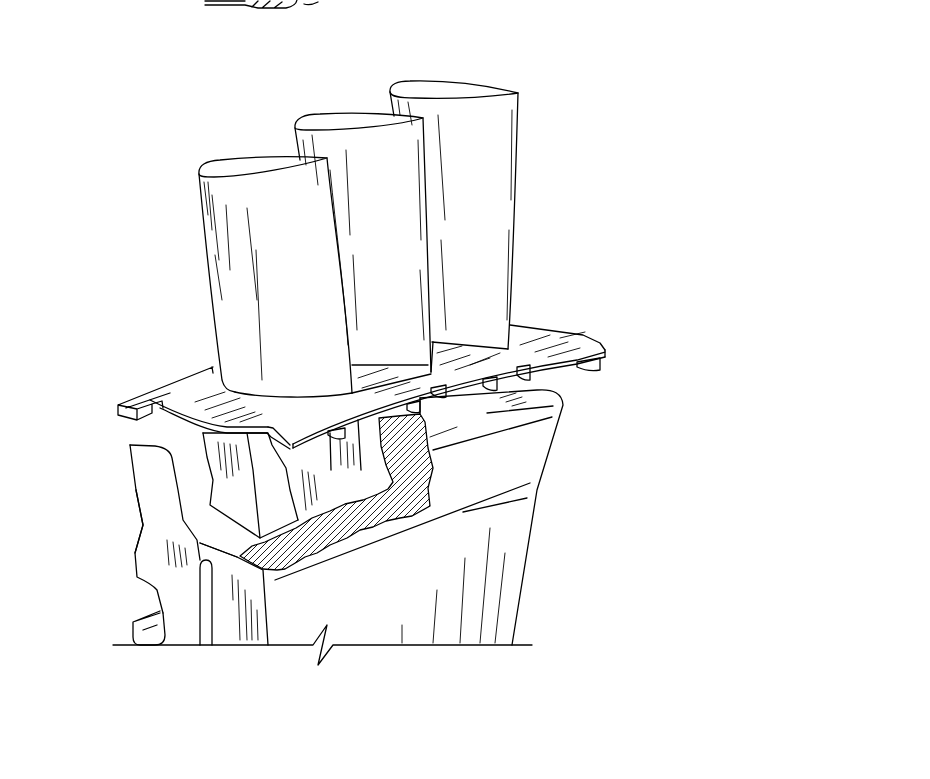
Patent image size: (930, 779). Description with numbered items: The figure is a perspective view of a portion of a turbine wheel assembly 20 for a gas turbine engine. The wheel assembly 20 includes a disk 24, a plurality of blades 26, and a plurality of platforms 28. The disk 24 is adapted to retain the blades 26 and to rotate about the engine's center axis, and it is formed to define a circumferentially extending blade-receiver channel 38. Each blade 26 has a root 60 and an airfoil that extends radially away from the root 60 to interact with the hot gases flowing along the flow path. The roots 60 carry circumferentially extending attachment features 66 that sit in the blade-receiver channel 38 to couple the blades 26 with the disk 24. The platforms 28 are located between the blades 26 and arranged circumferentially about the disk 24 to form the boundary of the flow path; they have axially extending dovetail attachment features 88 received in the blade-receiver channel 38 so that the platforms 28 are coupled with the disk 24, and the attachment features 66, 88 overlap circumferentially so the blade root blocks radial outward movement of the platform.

The wheel assembly 20 is at (648, 123).
The disk 24 is at (603, 475).
The blades 26 is at (248, 152).
The platforms 28 is at (143, 388).
The blade-receiver channel 38 is at (187, 513).
The root 60 is at (282, 455).
The attachment features 66 is at (248, 490).
The attachment features 88 is at (293, 482).